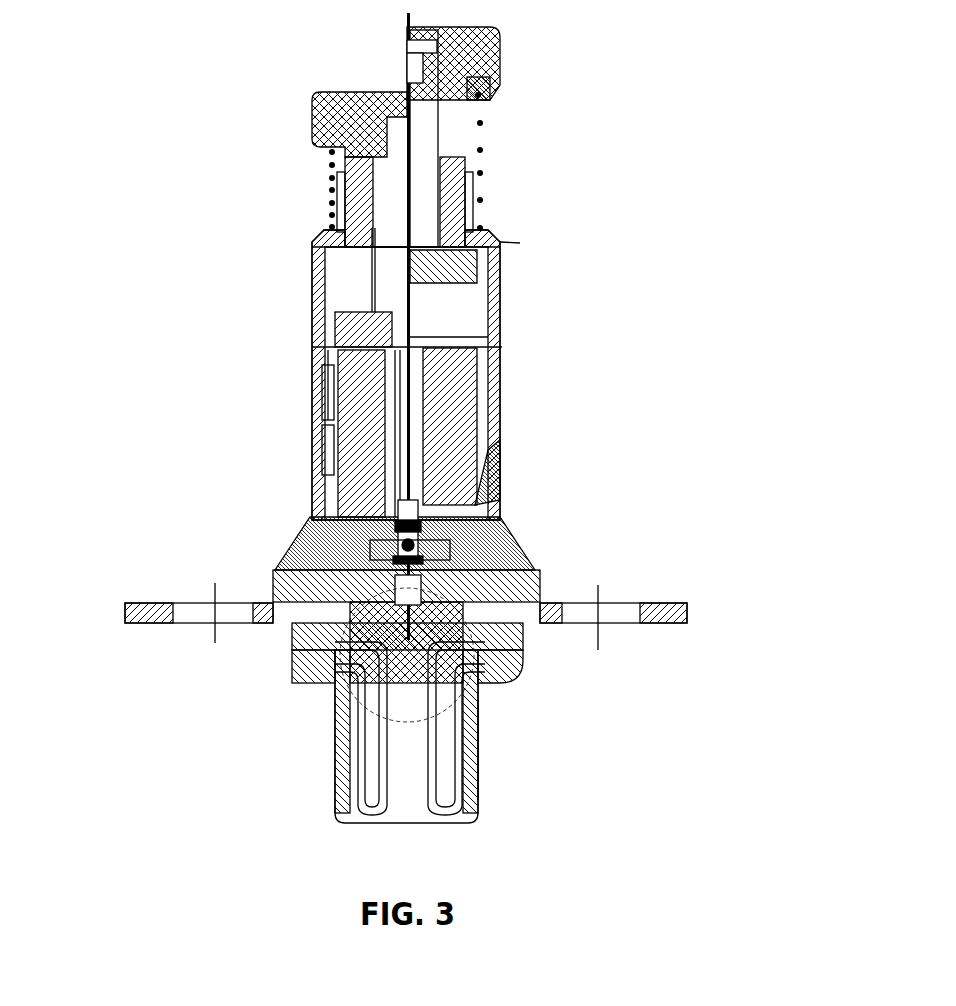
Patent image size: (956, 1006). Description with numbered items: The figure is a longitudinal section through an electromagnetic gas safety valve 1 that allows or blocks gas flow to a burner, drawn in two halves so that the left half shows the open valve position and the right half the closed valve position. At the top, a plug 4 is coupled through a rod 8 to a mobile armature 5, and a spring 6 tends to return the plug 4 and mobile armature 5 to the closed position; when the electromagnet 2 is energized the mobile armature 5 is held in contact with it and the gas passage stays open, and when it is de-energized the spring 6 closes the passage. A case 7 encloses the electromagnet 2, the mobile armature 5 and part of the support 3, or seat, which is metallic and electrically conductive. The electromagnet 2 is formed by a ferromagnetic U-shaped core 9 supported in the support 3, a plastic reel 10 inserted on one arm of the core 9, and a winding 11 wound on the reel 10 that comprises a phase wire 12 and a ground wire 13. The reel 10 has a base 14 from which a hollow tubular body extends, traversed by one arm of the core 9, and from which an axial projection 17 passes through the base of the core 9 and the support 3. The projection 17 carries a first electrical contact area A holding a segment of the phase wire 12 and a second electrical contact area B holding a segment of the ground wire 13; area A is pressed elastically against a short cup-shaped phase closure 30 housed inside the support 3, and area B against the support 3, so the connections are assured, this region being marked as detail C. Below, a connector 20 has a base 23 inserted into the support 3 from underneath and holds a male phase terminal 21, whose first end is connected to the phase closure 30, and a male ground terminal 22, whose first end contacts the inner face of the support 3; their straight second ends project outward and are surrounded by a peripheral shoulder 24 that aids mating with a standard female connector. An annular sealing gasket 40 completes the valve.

The gas safety valve 1 is at (672, 271).
The electromagnet 2 is at (488, 422).
The support 3 is at (323, 577).
The plug 4 is at (312, 120).
The mobile armature 5 is at (340, 320).
The spring 6 is at (332, 188).
The case 7 is at (502, 248).
The rod 8 is at (477, 126).
The core 9 is at (477, 381).
The reel 10 is at (338, 372).
The winding 11 is at (334, 438).
The phase wire 12 is at (345, 592).
The ground wire 13 is at (360, 530).
The base 14 is at (334, 463).
The projection 17 is at (520, 655).
The connector 20 is at (520, 738).
The phase terminal 21 is at (370, 748).
The ground terminal 22 is at (478, 795).
The base 23 is at (333, 663).
The peripheral shoulder 24 is at (477, 762).
The phase closure 30 is at (327, 677).
The sealing gasket 40 is at (440, 572).
The first electrical contact area A is at (545, 620).
The second electrical contact area B is at (492, 495).
The detail C is at (519, 546).